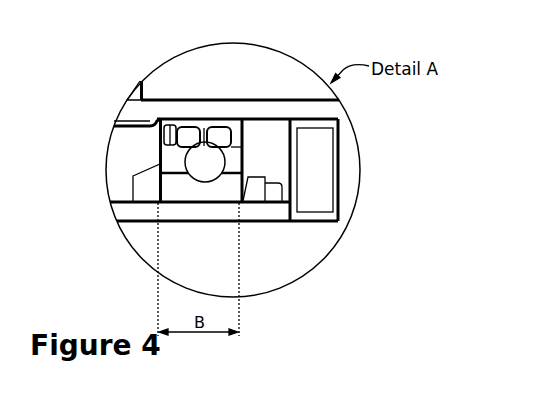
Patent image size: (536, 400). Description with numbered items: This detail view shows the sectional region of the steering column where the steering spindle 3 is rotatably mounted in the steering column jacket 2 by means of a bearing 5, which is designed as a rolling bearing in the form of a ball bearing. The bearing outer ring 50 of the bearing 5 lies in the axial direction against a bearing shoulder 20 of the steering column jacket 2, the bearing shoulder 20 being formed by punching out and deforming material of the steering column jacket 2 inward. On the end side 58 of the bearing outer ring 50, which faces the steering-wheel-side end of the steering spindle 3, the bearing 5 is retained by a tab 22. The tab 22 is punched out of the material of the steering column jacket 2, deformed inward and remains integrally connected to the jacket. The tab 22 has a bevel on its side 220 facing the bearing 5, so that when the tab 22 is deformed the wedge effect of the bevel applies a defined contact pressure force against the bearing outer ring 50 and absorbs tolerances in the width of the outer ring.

The steering column jacket 2 is at (226, 192).
The steering spindle 3 is at (205, 101).
The bearing 5 is at (187, 191).
The bearing shoulder 20 is at (150, 176).
The tab 22 is at (245, 189).
The bearing outer ring 50 is at (240, 200).
The end side 58 is at (240, 200).
The side 220 is at (240, 200).